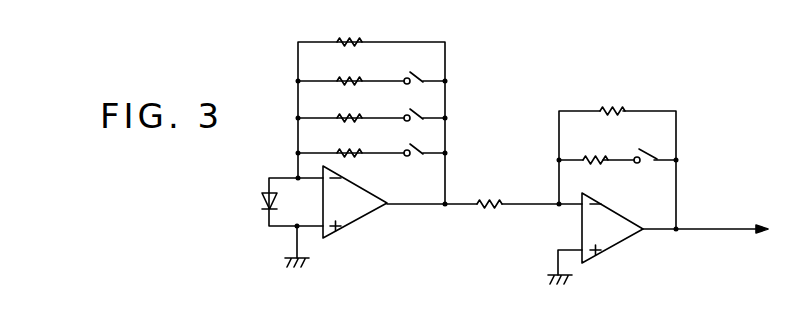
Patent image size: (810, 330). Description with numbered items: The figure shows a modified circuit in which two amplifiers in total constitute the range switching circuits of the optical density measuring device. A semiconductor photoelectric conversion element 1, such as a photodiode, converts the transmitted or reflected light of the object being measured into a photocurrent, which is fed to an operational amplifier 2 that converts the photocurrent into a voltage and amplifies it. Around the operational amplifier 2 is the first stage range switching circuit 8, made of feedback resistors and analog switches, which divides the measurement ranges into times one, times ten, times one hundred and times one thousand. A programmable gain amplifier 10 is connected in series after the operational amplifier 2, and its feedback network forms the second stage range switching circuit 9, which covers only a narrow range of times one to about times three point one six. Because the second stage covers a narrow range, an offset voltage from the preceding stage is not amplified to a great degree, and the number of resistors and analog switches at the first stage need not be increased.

The semiconductor photoelectric conversion element 1 is at (261, 196).
The operational amplifier 2 is at (357, 221).
The first stage range switching circuit 8 is at (297, 68).
The second stage range switching circuit 9 is at (556, 104).
The programmable gain amplifier 10 is at (623, 241).